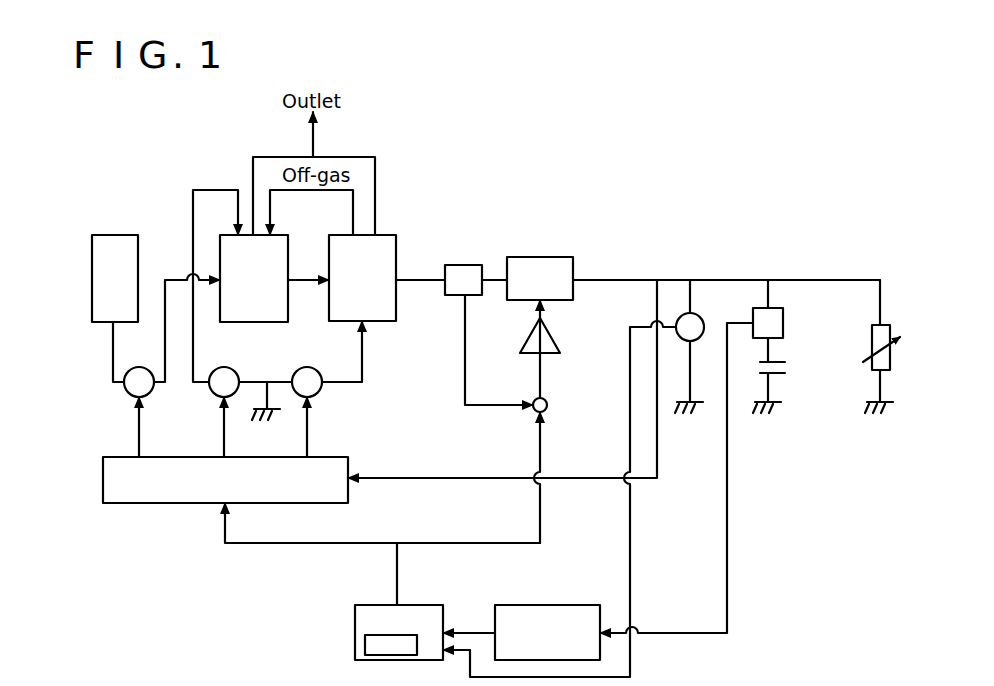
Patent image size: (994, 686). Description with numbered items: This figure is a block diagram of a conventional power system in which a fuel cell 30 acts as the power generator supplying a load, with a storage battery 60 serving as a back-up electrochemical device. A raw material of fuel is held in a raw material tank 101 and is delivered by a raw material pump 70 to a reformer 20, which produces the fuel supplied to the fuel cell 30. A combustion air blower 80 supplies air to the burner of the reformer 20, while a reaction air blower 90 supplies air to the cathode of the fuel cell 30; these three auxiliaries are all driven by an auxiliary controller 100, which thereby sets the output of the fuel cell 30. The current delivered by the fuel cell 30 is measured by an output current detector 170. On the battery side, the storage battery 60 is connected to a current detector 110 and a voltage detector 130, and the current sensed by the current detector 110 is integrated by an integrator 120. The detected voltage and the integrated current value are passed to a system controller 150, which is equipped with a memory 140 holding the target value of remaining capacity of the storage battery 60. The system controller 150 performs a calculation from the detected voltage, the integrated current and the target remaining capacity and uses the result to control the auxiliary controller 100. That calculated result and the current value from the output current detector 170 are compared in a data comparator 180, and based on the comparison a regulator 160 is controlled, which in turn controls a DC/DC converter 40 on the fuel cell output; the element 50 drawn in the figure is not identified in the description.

The raw material tank 101 is at (123, 238).
The reformer 20 is at (282, 238).
The fuel cell 30 is at (395, 243).
The output current detector 170 is at (467, 265).
The DC/DC converter 40 is at (573, 262).
The voltage detector 130 is at (702, 317).
The current detector 110 is at (783, 318).
The storage battery 60 is at (785, 370).
The variable resistor 50 is at (890, 340).
The regulator 160 is at (545, 342).
The data comparator 180 is at (548, 408).
The raw material pump 70 is at (145, 390).
The combustion air blower 80 is at (227, 375).
The reaction air blower 90 is at (308, 375).
The auxiliary controller 100 is at (337, 462).
The system controller 150 is at (437, 608).
The memory 140 is at (373, 648).
The integrator 120 is at (582, 605).